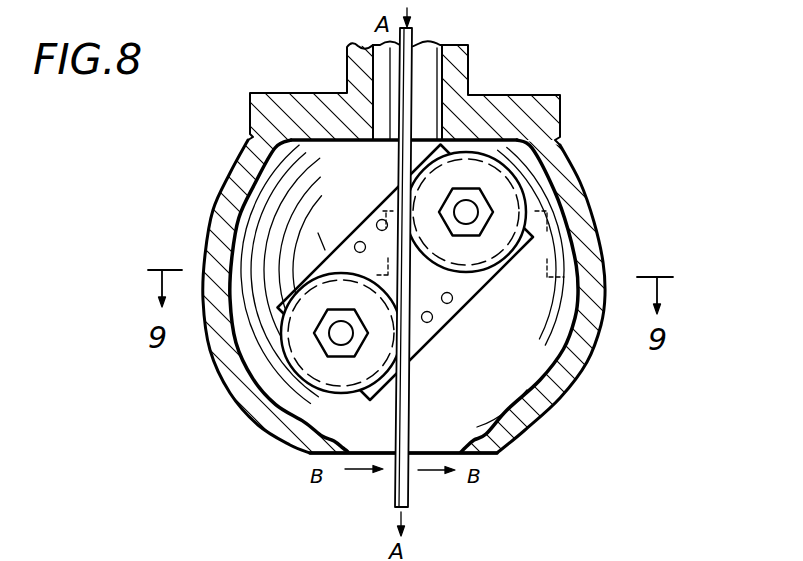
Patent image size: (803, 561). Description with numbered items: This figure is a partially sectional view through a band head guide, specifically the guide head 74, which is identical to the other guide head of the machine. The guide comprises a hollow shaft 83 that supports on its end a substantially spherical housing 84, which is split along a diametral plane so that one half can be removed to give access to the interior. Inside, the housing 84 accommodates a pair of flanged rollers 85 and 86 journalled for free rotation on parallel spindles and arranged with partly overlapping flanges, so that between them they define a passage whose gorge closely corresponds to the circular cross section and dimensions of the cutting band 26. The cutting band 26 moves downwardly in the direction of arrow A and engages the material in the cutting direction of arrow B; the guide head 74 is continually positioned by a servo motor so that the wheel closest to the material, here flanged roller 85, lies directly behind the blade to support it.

The cutting band 26 is at (410, 407).
The guide head 74 is at (601, 187).
The hollow shaft 83 is at (453, 72).
The housing 84 is at (583, 233).
The flanged roller 85 is at (333, 290).
The flanged roller 86 is at (490, 250).